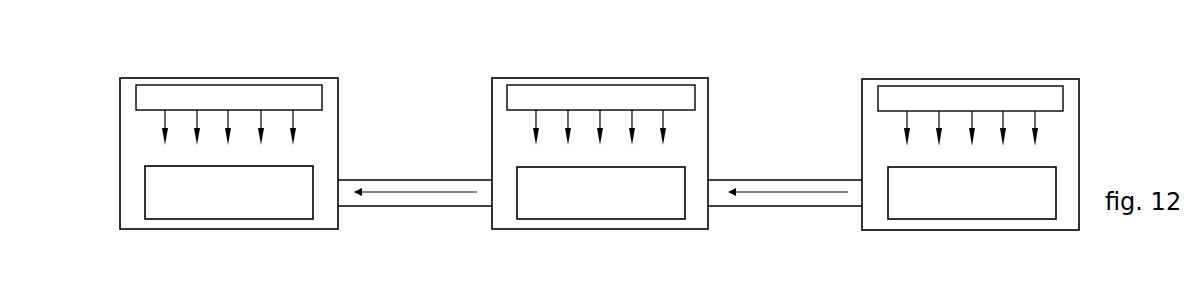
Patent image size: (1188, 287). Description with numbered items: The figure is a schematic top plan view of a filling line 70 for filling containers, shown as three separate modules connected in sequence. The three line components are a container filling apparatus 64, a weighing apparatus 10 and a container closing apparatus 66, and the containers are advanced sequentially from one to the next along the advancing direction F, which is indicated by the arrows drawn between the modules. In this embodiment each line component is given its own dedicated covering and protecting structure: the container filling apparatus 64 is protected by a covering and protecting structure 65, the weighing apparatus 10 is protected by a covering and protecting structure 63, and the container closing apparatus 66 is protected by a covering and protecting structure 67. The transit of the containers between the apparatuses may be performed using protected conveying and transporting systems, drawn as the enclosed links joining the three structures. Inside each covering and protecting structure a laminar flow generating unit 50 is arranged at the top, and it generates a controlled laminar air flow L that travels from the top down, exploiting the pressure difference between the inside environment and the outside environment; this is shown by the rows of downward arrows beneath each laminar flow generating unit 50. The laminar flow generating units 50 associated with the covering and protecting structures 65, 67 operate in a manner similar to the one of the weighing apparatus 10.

The filling line 70 is at (571, 141).
The covering and protecting structure 67 is at (120, 126).
The covering and protecting structure 63 is at (492, 128).
The covering and protecting structure 65 is at (862, 130).
The container closing apparatus 66 is at (217, 229).
The weighing apparatus 10 is at (633, 229).
The container filling apparatus 64 is at (947, 230).
The laminar flow generating unit 50 is at (250, 92).
The laminar air flow L is at (609, 95).
The advancing direction F is at (401, 192).